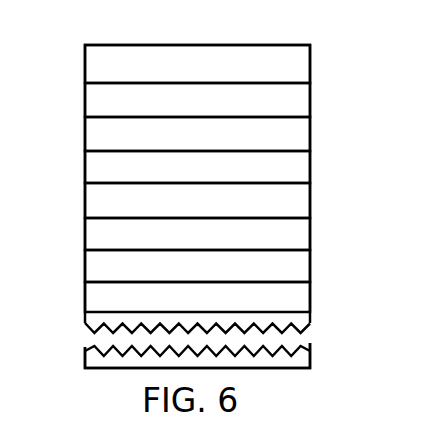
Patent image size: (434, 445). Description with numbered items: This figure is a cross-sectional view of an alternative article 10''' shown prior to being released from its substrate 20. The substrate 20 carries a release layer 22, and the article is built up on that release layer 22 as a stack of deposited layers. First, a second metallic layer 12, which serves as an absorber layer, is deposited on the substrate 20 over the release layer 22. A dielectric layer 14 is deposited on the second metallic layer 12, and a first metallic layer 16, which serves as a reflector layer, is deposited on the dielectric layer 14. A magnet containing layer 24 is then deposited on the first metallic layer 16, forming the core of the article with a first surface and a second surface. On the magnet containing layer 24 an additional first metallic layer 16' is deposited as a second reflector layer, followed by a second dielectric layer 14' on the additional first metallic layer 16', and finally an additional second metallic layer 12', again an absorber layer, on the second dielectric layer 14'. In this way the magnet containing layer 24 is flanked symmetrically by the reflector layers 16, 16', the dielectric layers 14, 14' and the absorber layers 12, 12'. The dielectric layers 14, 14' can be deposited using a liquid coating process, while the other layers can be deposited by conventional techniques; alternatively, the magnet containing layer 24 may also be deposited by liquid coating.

The article 10''' is at (241, 206).
The additional second metallic layer 12' is at (170, 64).
The second dielectric layer 14' is at (170, 100).
The additional first metallic layer 16' is at (170, 134).
The magnet containing layer 24 is at (85, 167).
The first metallic layer 16 is at (170, 200).
The dielectric layer 14 is at (170, 234).
The second metallic layer 12 is at (170, 266).
The release layer 22 is at (85, 297).
The substrate 20 is at (85, 351).